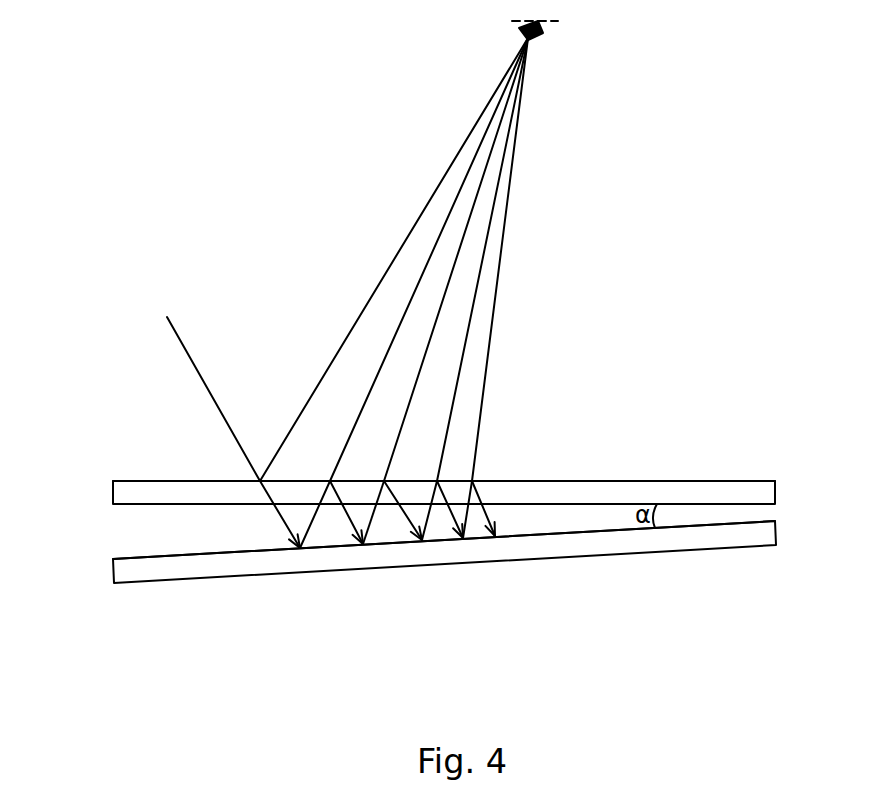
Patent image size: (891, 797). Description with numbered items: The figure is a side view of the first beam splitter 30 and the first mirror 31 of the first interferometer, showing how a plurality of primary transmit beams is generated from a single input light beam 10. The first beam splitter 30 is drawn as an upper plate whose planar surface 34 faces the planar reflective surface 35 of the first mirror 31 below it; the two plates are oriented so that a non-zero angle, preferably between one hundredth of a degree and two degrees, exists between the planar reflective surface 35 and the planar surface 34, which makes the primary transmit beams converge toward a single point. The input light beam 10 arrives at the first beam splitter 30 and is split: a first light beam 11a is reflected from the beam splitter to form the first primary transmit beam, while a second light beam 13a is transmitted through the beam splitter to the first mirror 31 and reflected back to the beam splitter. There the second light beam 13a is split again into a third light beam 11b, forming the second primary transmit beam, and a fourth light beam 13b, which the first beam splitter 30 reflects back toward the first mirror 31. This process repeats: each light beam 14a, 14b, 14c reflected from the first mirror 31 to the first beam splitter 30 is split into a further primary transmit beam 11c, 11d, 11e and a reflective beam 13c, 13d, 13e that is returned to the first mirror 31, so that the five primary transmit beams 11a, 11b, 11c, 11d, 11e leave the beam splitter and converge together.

The input light beam 10 is at (188, 355).
The first light beam 11a is at (404, 243).
The third light beam 11b is at (443, 227).
The primary transmit beam 11c is at (462, 243).
The primary transmit beam 11d is at (481, 273).
The primary transmit beam 11e is at (493, 322).
The second light beam 13a is at (288, 521).
The fourth light beam 13b is at (350, 514).
The reflective beam 13c is at (410, 517).
The reflective beam 13d is at (446, 526).
The reflective beam 13e is at (484, 526).
The light beam 14a is at (371, 537).
The light beam 14b is at (447, 528).
The light beam 14c is at (482, 540).
The first beam splitter 30 is at (775, 492).
The first mirror 31 is at (690, 538).
The planar surface 34 is at (140, 481).
The planar reflective surface 35 is at (148, 558).